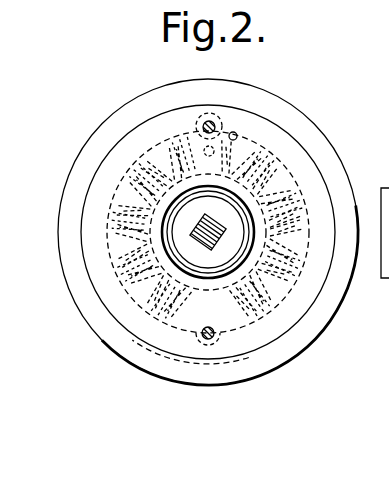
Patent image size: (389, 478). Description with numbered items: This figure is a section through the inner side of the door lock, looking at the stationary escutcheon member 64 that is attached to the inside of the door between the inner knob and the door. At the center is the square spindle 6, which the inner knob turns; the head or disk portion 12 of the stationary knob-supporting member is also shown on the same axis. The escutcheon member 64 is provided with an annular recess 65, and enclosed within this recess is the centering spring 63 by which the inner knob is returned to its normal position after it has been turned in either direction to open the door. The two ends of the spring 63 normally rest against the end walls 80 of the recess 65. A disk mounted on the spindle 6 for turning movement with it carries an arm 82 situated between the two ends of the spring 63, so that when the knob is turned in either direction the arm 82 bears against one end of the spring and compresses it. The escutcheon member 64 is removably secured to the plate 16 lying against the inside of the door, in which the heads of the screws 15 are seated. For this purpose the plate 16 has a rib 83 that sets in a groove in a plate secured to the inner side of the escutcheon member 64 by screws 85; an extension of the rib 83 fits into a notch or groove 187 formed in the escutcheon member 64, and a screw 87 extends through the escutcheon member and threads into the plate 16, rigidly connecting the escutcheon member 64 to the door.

The spindle 6 is at (218, 241).
The head or disk portion 12 is at (215, 210).
The screws 15 is at (208, 124).
The plate 16 is at (307, 305).
The centering spring 63 is at (125, 272).
The escutcheon member 64 is at (86, 151).
The annular recess 65 is at (115, 192).
The end walls 80 is at (180, 148).
The arm 82 is at (160, 140).
The rib 83 is at (160, 338).
The screws 85 is at (245, 364).
The screw 87 is at (233, 132).
The notch or groove 187 is at (153, 340).